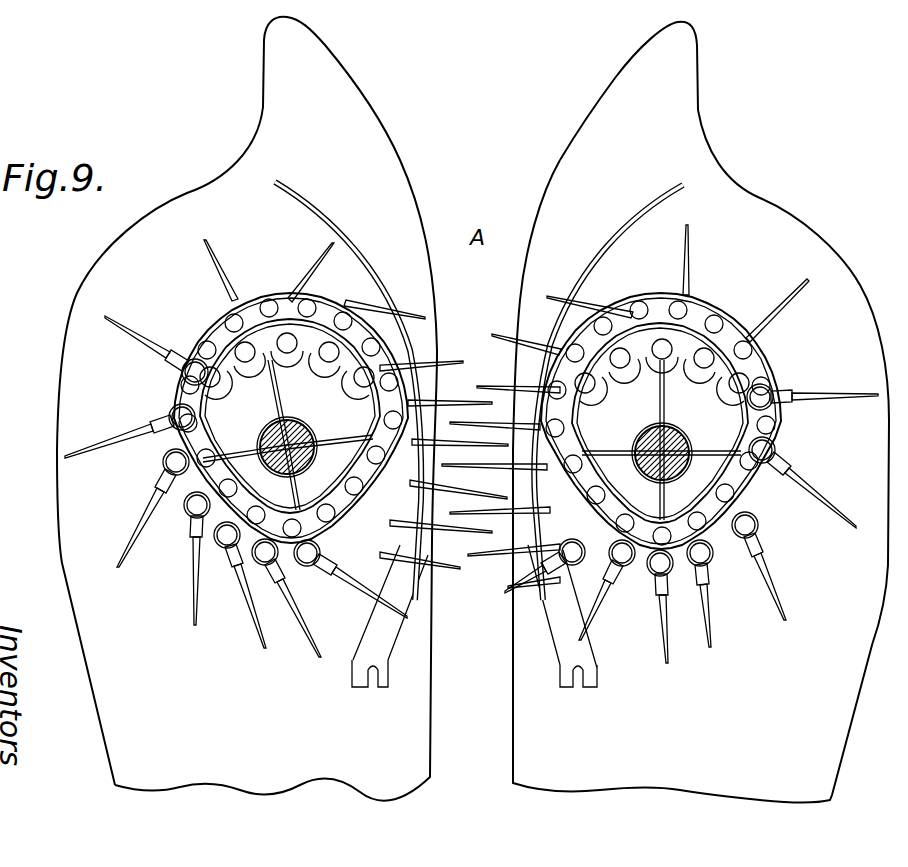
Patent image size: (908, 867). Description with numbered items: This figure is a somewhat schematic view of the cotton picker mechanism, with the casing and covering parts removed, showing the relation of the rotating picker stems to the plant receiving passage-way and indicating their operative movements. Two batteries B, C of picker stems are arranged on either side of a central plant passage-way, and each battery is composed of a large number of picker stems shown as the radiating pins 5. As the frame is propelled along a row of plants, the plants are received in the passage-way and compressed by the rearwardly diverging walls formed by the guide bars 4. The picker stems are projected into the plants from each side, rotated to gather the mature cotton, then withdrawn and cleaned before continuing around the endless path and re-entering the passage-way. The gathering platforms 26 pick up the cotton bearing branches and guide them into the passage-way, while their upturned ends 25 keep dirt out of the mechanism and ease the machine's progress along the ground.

The upturned ends 25 is at (270, 22).
The gathering platforms 26 is at (566, 155).
The guide bars 4 is at (357, 237).
The radial pins 5 is at (188, 560).
The battery B is at (279, 438).
The battery C is at (666, 444).